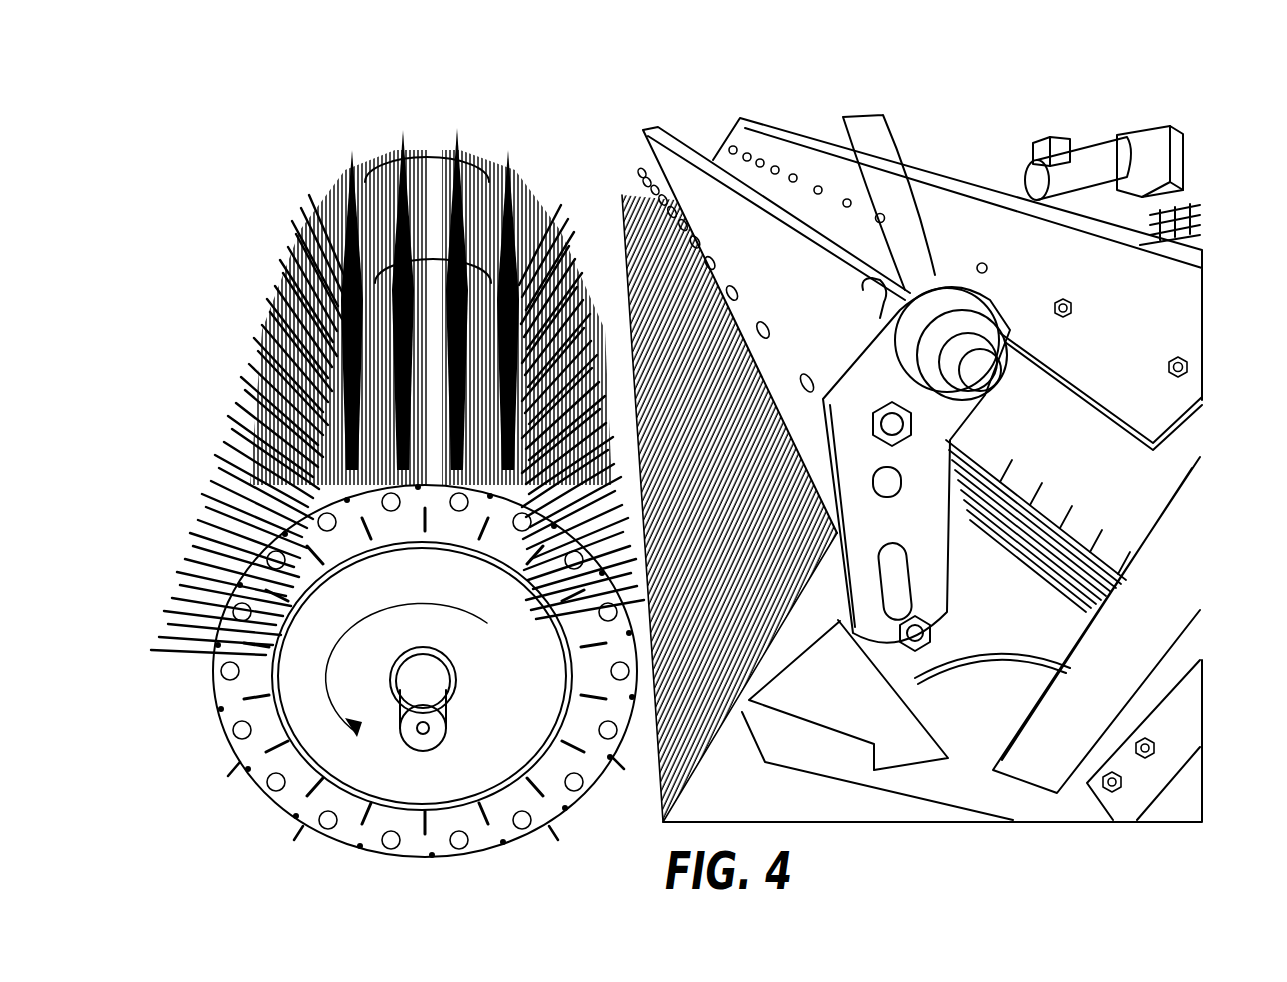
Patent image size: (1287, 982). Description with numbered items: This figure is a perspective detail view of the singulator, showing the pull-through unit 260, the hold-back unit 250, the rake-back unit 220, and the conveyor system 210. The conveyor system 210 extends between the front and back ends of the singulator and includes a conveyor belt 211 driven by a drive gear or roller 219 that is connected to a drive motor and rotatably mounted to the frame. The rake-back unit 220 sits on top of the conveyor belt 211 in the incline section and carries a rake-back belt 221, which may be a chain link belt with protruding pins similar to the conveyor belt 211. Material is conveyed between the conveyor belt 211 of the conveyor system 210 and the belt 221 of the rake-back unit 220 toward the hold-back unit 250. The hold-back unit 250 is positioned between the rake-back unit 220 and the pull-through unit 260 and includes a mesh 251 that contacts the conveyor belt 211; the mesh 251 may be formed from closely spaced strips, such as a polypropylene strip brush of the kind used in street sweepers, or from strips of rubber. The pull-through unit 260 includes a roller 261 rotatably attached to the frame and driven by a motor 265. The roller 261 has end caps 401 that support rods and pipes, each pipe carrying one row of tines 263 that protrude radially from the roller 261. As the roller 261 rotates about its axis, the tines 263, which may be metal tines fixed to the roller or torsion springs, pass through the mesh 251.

The conveyor system 210 is at (1055, 850).
The conveyor belt 211 is at (1107, 603).
The drive gear or roller 219 is at (1014, 697).
The rake-back unit 220 is at (1025, 83).
The rake-back belt 221 is at (1188, 198).
The hold-back unit 250 is at (630, 83).
The mesh 251 is at (631, 215).
The pull-through unit 260 is at (330, 95).
The roller 261 is at (240, 760).
The tines 263 is at (490, 143).
The motor 265 is at (427, 752).
The end caps 401 is at (1105, 547).